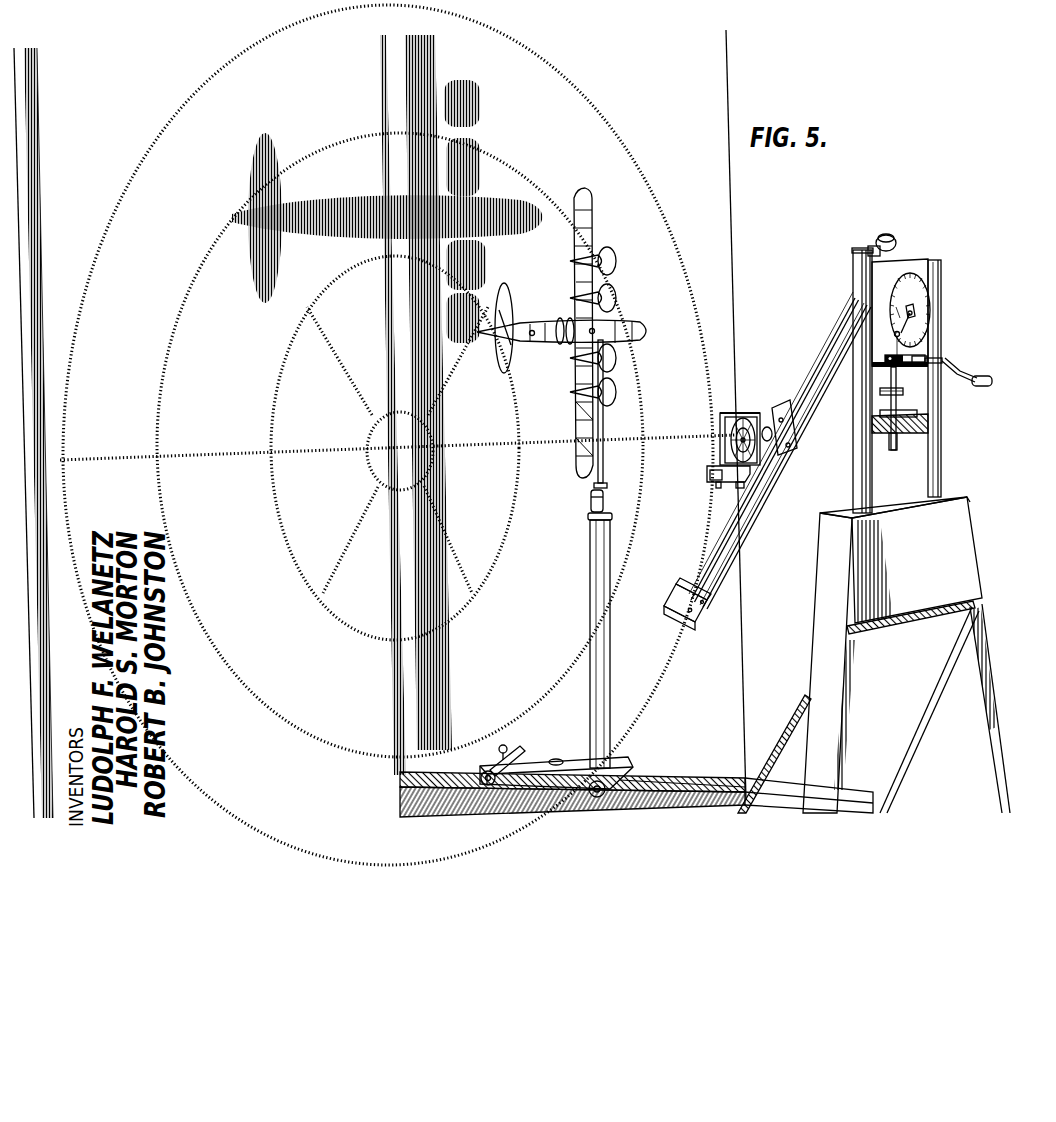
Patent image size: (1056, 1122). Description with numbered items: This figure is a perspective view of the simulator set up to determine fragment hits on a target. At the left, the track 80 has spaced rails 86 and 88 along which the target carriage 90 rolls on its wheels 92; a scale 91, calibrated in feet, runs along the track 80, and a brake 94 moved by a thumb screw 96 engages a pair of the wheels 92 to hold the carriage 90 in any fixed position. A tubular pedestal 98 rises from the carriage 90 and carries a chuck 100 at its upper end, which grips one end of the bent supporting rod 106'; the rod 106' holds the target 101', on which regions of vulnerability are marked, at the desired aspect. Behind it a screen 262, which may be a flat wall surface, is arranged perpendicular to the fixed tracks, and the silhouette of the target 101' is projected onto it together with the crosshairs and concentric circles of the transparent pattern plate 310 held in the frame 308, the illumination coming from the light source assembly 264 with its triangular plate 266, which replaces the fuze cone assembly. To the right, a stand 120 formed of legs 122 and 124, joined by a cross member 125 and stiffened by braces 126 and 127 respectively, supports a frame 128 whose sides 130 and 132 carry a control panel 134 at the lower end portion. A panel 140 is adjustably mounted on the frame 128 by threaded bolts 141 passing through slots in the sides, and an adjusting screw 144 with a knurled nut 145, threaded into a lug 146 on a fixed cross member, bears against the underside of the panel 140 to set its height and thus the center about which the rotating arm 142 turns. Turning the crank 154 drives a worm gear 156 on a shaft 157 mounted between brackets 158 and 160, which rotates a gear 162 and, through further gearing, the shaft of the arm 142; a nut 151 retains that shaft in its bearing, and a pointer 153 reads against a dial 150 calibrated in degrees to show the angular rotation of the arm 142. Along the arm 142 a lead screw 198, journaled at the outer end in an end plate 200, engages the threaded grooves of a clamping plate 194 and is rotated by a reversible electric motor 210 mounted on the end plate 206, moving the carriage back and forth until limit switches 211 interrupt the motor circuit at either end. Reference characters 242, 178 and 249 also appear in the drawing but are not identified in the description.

The screen 262 is at (729, 91).
The target 101' is at (570, 333).
The supporting rod 106' is at (633, 414).
The chuck 100 is at (604, 503).
The tubular pedestal 98 is at (611, 548).
The thumb screw 96 is at (503, 745).
The brake 94 is at (515, 760).
The target carriage 90 is at (562, 757).
The wheels 92 is at (593, 792).
The scale 91 is at (672, 774).
The rail 86 is at (707, 790).
The rail 88 is at (400, 788).
The track 80 is at (400, 811).
The frame 308 is at (720, 421).
The transparent pattern plate 310 is at (715, 469).
The light source assembly 264 is at (742, 412).
The triangular plate 266 is at (766, 427).
The clamping plate 194 is at (783, 404).
The lead screw 198 is at (815, 360).
The beam upper edge 242 is at (838, 322).
The rotating arm 142 is at (830, 400).
The beam rail 178 is at (758, 535).
The end plate 200 is at (712, 625).
The limit switches 211 is at (681, 606).
The screws 249 is at (688, 618).
The end plate 206 is at (870, 247).
The reversible electric motor 210 is at (888, 238).
The threaded bolts 141 is at (857, 266).
The frame side 132 is at (853, 291).
The frame 128 is at (944, 283).
The frame side 130 is at (941, 298).
The panel 140 is at (894, 282).
The pointer 153 is at (895, 308).
The nut 151 is at (915, 303).
The dial 150 is at (930, 315).
The gear 162 is at (895, 334).
The bracket 158 is at (896, 356).
The shaft 157 is at (928, 356).
The bracket 160 is at (938, 359).
The crank 154 is at (950, 373).
The worm gear 156 is at (908, 408).
The knurled nut 145 is at (905, 392).
The lug 146 is at (919, 415).
The adjusting screw 144 is at (897, 442).
The control panel 134 is at (968, 543).
The cross member 125 is at (933, 626).
The stand 120 is at (995, 672).
The brace 127 is at (787, 731).
The leg 124 is at (851, 732).
The brace 126 is at (937, 735).
The leg 122 is at (1005, 770).